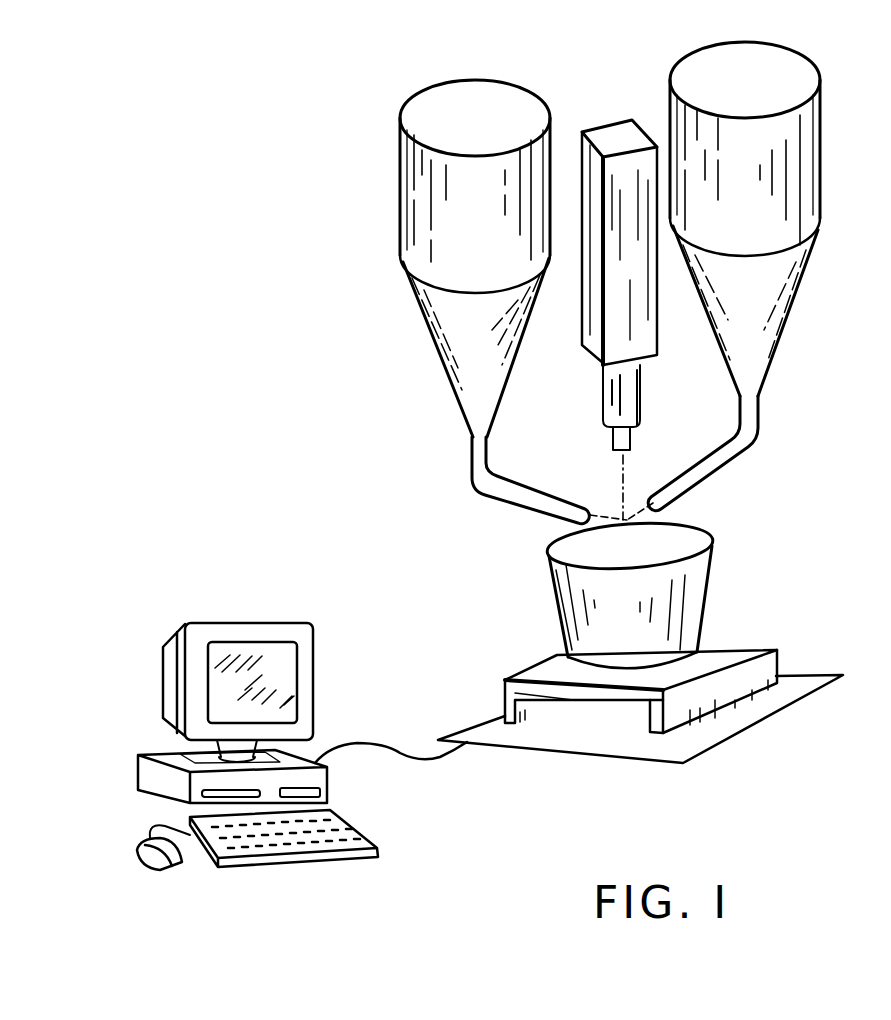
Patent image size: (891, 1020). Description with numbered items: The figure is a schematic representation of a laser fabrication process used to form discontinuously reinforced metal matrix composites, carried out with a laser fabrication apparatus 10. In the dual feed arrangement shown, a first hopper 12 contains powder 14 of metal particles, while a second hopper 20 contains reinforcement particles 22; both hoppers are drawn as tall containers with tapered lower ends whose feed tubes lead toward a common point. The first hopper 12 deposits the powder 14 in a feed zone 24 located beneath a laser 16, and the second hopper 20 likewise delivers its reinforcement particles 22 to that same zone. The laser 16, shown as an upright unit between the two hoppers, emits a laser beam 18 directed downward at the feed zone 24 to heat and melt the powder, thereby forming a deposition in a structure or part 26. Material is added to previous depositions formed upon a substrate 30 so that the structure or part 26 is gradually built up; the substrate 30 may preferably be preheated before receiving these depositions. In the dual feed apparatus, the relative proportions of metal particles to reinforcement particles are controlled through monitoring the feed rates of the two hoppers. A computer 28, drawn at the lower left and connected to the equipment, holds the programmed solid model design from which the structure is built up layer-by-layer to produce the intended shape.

The laser fabrication apparatus 10 is at (576, 97).
The first hopper 12 is at (467, 382).
The powder 14 is at (516, 100).
The laser 16 is at (641, 351).
The laser beam 18 is at (623, 462).
The second hopper 20 is at (773, 355).
The reinforcement particles 22 is at (684, 73).
The feed zone 24 is at (682, 518).
The structure or part 26 is at (573, 597).
The computer 28 is at (218, 688).
The substrate 30 is at (550, 667).